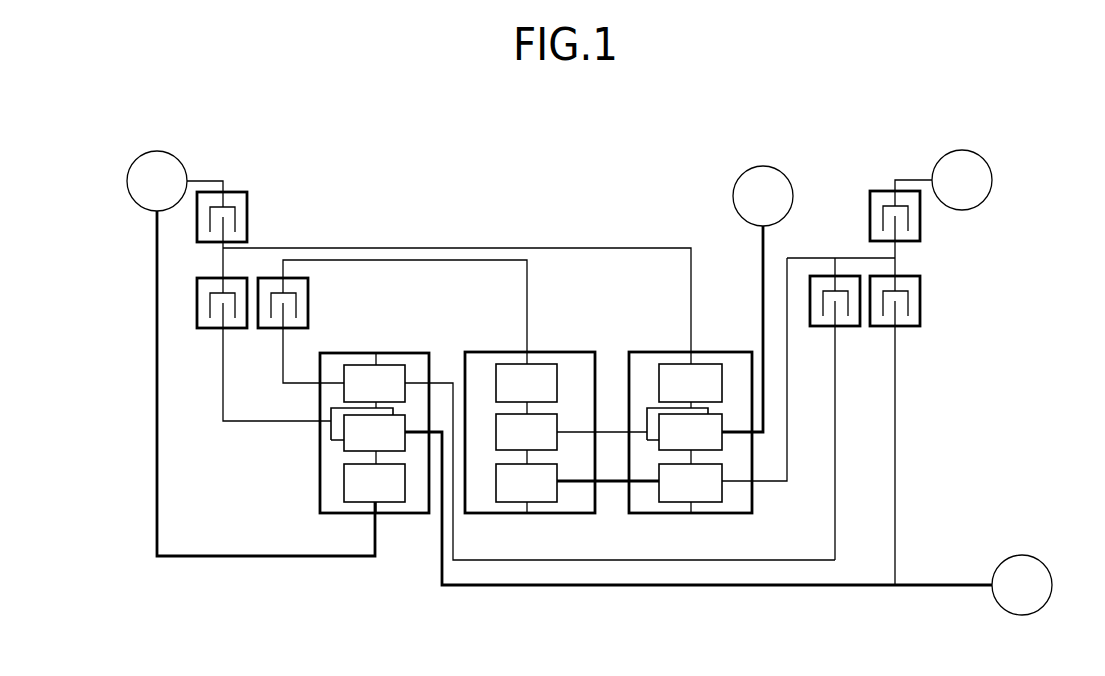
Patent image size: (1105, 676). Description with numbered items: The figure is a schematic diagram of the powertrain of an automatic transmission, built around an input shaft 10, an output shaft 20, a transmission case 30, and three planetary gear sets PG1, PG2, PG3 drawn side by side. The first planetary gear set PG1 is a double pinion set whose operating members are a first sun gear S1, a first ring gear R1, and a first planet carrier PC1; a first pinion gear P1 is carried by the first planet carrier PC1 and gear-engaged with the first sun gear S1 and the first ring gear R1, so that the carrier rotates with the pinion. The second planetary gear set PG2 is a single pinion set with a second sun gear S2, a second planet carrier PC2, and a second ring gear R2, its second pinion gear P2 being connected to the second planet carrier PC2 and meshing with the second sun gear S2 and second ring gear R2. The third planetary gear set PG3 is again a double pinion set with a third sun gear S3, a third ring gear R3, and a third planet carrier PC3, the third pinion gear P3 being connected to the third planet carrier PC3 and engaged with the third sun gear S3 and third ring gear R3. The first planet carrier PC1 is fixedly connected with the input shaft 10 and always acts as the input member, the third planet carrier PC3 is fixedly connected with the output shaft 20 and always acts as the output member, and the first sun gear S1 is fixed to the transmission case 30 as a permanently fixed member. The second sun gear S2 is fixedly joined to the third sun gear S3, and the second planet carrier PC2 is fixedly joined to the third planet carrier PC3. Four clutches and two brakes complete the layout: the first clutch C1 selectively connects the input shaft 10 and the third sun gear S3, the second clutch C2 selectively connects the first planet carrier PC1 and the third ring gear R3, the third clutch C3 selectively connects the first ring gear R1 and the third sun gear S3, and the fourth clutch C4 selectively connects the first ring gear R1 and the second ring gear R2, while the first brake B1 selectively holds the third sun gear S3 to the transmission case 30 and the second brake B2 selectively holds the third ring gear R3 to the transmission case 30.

The input shaft 10 is at (1053, 585).
The output shaft 20 is at (732, 196).
The transmission case 30 is at (126, 181).
The first planetary gear set PG1 is at (557, 456).
The second planetary gear set PG2 is at (562, 445).
The third planetary gear set PG3 is at (708, 398).
The first sun gear S1 is at (374, 483).
The second sun gear S2 is at (577, 483).
The third sun gear S3 is at (723, 380).
The first ring gear R1 is at (589, 462).
The second ring gear R2 is at (526, 383).
The third ring gear R3 is at (690, 383).
The first pinion gear P1 is at (368, 429).
The second pinion gear P2 is at (571, 432).
The third pinion gear P3 is at (684, 429).
The first planet carrier PC1 is at (296, 433).
The second planet carrier PC2 is at (575, 420).
The third planet carrier PC3 is at (614, 446).
The first clutch C1 is at (897, 430).
The second clutch C2 is at (264, 349).
The third clutch C3 is at (836, 409).
The fourth clutch C4 is at (392, 321).
The first brake B1 is at (855, 241).
The second brake B2 is at (443, 278).